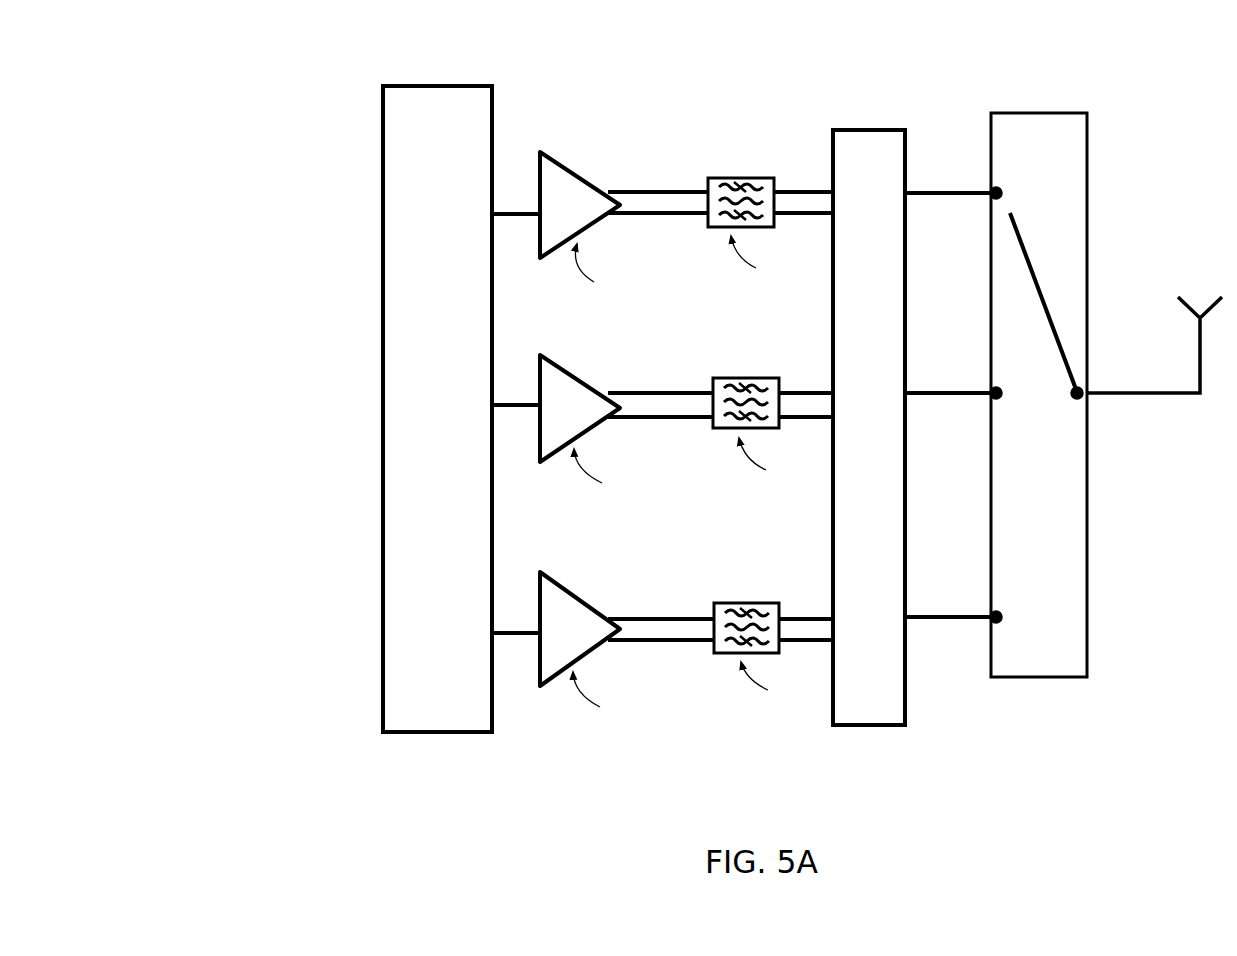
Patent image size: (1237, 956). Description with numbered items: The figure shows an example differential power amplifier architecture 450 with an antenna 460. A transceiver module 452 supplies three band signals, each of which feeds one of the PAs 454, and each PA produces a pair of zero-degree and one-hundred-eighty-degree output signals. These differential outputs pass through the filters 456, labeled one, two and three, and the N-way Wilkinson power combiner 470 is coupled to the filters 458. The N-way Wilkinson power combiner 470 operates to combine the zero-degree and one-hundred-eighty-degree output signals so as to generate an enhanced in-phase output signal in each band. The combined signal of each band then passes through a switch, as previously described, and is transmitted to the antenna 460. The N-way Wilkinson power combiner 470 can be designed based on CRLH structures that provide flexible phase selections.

The differential power amplifier architecture 450 is at (266, 86).
The transceiver module 452 is at (383, 655).
The PAs 454 is at (562, 106).
The filters 456 is at (686, 106).
The filters 458 is at (969, 416).
The antenna 460 is at (1158, 296).
The N-way Wilkinson power combiner 470 is at (904, 510).